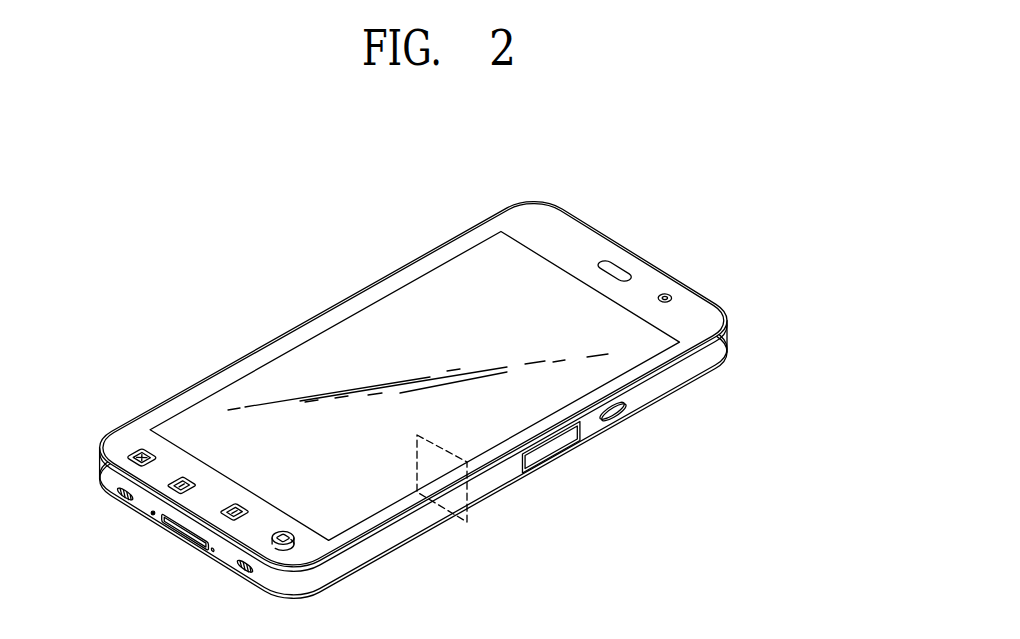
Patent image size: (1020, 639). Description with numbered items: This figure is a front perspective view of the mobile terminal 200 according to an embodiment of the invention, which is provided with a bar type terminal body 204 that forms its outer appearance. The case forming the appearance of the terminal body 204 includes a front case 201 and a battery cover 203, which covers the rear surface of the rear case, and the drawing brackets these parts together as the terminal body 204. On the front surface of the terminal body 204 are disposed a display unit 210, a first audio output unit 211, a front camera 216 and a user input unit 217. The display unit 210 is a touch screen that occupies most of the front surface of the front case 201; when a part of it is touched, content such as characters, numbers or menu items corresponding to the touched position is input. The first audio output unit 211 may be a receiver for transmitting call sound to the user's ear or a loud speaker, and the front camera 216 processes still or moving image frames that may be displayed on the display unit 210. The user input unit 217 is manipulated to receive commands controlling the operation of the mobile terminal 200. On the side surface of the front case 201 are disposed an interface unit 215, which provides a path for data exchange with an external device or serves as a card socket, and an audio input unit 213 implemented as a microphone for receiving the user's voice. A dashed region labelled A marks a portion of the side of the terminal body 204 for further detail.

The mobile terminal 200 is at (256, 294).
The front case 201 is at (727, 342).
The battery cover 203 is at (717, 367).
The terminal body 204 is at (813, 328).
The display unit 210 is at (396, 315).
The first audio output unit 211 is at (618, 270).
The audio input unit 213 is at (150, 515).
The interface unit 215 is at (553, 450).
The front camera 216 is at (668, 297).
The user input unit 217 is at (138, 452).
The region A is at (470, 496).